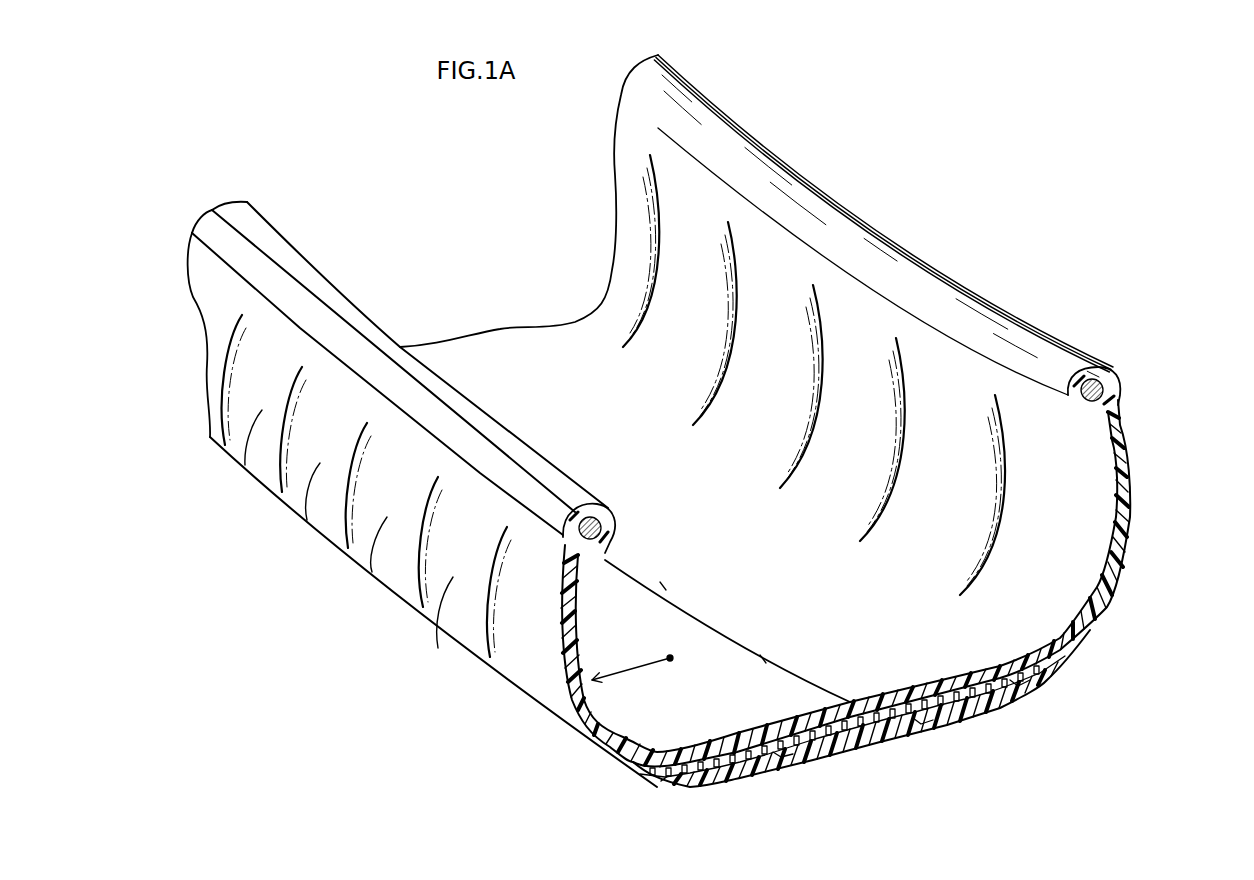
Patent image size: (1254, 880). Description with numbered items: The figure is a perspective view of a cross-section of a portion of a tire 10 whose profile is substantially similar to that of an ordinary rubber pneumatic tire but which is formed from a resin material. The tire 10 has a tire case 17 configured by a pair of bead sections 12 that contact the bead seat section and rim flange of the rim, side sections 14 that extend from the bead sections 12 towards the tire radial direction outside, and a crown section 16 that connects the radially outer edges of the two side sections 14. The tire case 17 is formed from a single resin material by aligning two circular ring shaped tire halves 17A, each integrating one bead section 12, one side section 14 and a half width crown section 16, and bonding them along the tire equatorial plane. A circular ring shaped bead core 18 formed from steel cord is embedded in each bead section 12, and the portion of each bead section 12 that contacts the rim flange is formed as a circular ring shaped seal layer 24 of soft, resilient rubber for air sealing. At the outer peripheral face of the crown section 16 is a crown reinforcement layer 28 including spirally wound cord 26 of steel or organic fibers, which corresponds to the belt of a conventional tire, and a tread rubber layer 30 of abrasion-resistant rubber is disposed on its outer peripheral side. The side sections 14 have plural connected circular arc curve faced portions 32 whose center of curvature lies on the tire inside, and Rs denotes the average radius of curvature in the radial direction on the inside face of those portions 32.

The tire 10 is at (929, 186).
The bead sections 12 is at (554, 474).
The side sections 14 is at (541, 664).
The crown section 16 is at (1018, 682).
The tire case 17 is at (832, 573).
The tire halves 17A is at (691, 644).
The bead core 18 is at (604, 522).
The seal layer 24 is at (490, 455).
The cord 26 is at (772, 758).
The crown reinforcement layer 28 is at (849, 742).
The tread rubber layer 30 is at (659, 787).
The circular arc curve faced portions 32 is at (244, 468).
The radius of curvature in the radial direction Rs is at (630, 674).